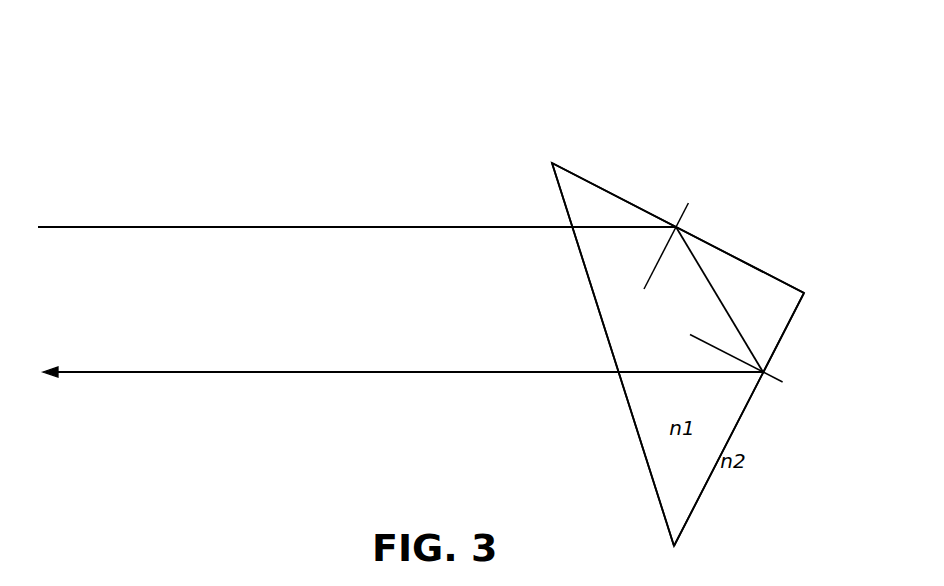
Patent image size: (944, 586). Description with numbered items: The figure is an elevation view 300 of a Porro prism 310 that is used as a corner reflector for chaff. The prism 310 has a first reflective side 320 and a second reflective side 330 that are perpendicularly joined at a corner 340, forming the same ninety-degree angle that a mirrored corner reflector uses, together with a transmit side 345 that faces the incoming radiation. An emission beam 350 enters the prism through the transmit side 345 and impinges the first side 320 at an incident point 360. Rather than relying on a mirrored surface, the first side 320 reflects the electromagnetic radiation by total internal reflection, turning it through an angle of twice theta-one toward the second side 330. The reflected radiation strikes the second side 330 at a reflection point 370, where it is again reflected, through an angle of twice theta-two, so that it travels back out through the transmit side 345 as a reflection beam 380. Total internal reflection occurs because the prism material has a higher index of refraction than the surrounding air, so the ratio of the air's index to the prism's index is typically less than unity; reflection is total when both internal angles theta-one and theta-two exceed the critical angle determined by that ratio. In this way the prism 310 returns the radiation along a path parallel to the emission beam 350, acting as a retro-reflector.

The elevation view 300 is at (162, 105).
The Porro prism 310 is at (543, 145).
The first reflective side 320 is at (730, 247).
The second reflective side 330 is at (695, 513).
The corner 340 is at (813, 290).
The transmit side 345 is at (636, 433).
The emission beam 350 is at (297, 227).
The incident point 360 is at (632, 270).
The reflection point 370 is at (733, 383).
The reflection beam 380 is at (230, 377).